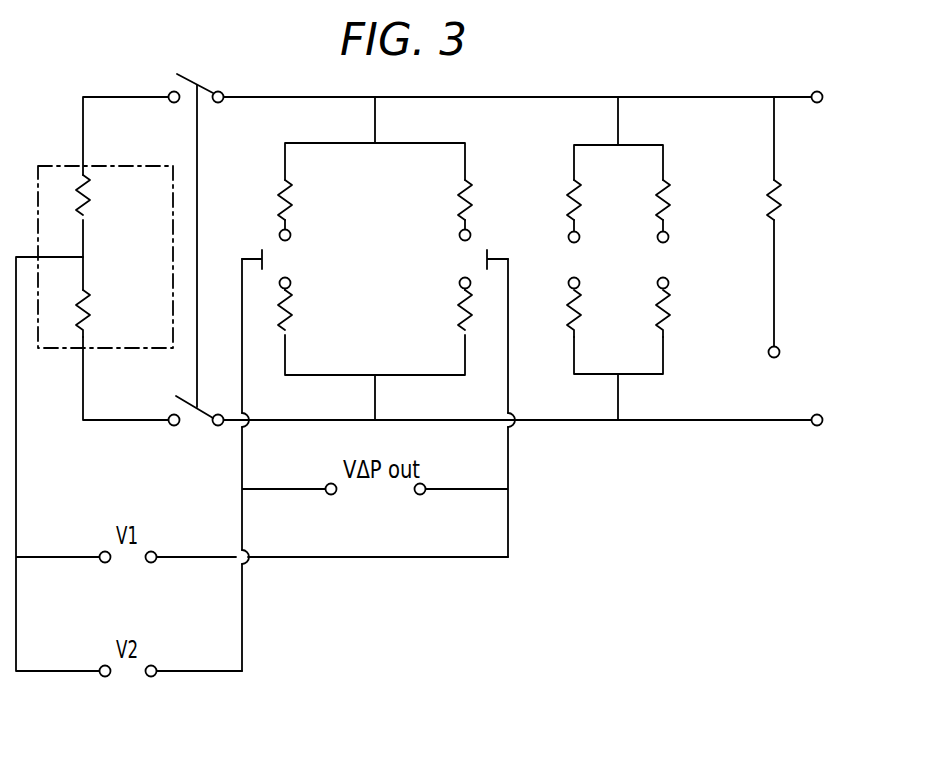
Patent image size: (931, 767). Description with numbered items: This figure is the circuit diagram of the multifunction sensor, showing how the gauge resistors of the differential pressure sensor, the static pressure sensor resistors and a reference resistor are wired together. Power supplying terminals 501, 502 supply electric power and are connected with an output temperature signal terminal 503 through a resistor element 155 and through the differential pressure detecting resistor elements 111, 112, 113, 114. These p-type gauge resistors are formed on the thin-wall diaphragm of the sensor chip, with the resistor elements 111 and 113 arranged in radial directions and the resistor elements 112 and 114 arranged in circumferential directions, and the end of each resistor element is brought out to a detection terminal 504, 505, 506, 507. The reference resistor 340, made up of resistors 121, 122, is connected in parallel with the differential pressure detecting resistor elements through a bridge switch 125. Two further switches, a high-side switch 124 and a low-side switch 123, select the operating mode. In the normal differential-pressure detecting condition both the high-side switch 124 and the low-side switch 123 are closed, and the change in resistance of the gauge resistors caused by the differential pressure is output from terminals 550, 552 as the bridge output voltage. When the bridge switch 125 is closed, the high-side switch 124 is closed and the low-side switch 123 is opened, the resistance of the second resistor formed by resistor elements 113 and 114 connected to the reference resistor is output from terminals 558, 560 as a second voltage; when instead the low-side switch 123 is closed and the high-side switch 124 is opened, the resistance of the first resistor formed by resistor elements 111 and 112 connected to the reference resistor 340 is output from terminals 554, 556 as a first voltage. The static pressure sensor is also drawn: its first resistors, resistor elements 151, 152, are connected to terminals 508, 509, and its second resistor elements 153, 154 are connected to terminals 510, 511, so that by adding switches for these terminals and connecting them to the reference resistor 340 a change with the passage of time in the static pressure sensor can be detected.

The reference resistor 340 is at (47, 165).
The resistor 121 is at (90, 185).
The resistor 122 is at (88, 322).
The switch SWB 125 is at (198, 124).
The switch SWH 124 is at (242, 256).
The switch SWL 123 is at (504, 250).
The resistor element 111 is at (458, 214).
The resistor element 112 is at (458, 333).
The resistor element 113 is at (292, 322).
The resistor element 114 is at (292, 188).
The resistor element 151 is at (656, 191).
The resistor element 152 is at (656, 327).
The resistor element 153 is at (568, 330).
The resistor element 154 is at (567, 190).
The resistor element 155 is at (780, 190).
The power supplying terminal 501 is at (818, 91).
The power supplying terminal 502 is at (818, 413).
The output temperature signal terminal 503 is at (780, 352).
The detection terminal 504 is at (459, 240).
The detection terminal 505 is at (459, 287).
The detection terminal 506 is at (291, 234).
The detection terminal 507 is at (291, 282).
The terminal 508 is at (669, 235).
The terminal 509 is at (669, 286).
The terminal 510 is at (580, 236).
The terminal 511 is at (580, 282).
The terminal 550 is at (331, 495).
The terminal 552 is at (420, 495).
The terminal 554 is at (105, 563).
The terminal 556 is at (151, 563).
The terminal 558 is at (105, 677).
The terminal 560 is at (151, 677).